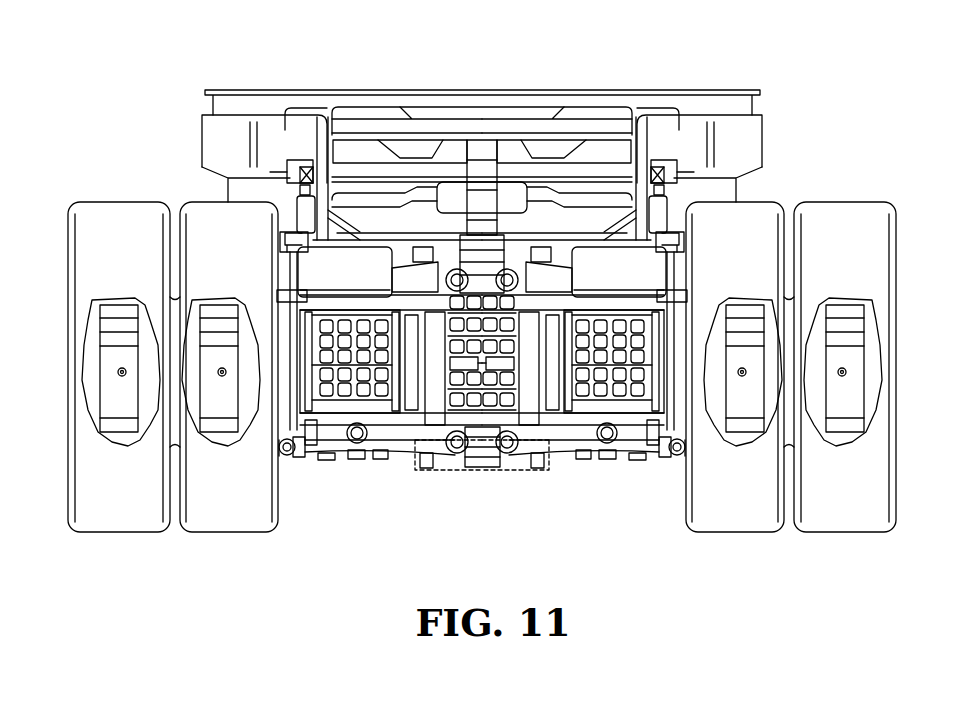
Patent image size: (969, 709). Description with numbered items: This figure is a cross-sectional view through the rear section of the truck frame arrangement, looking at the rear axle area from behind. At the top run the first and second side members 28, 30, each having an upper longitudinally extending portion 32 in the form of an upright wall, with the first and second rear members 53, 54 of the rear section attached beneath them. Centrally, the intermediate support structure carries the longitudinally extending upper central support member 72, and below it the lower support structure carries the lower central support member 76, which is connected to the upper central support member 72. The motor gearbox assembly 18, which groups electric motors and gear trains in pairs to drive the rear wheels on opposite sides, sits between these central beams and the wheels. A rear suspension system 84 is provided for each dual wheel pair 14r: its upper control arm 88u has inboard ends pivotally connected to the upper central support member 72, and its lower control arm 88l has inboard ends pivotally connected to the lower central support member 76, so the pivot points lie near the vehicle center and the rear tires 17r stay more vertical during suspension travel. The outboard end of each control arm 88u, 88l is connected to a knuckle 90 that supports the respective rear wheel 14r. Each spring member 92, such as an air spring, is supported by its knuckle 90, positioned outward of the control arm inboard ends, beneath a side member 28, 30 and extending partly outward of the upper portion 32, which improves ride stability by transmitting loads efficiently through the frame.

The rear wheel 14r is at (233, 395).
The rear tire 17r is at (207, 202).
The motor gearbox assembly 18 is at (372, 413).
The first side member 28 is at (290, 104).
The second side member 30 is at (658, 108).
The upper longitudinally extending portion 32 is at (355, 188).
The first rear member 53 is at (320, 132).
The second rear member 54 is at (657, 136).
The upper central support member 72 is at (502, 222).
The lower central support member 76 is at (485, 462).
The rear suspension system 84 is at (348, 490).
The upper control arm 88u is at (443, 240).
The lower control arm 88l is at (358, 458).
The knuckle 90 is at (280, 455).
The spring member 92 is at (337, 263).